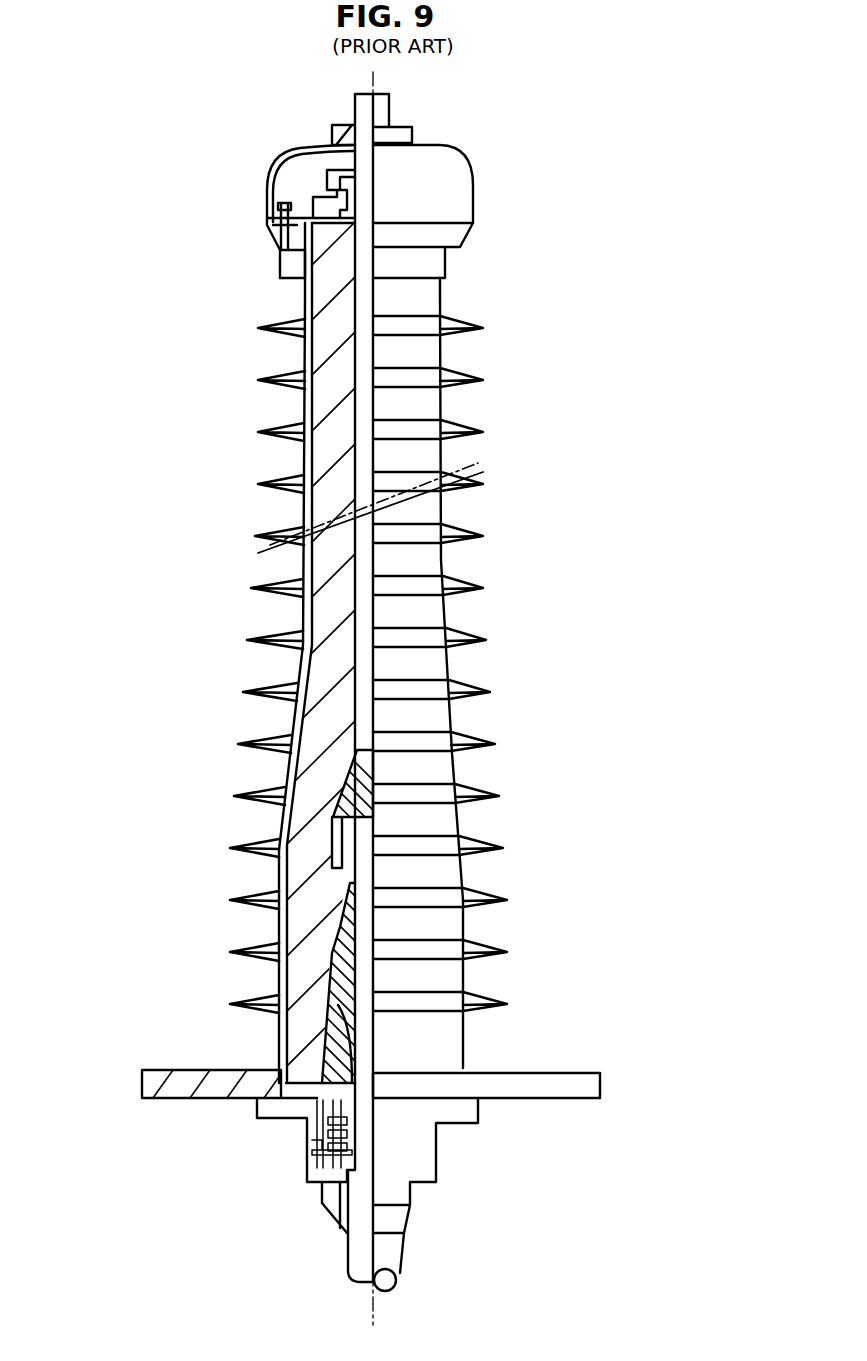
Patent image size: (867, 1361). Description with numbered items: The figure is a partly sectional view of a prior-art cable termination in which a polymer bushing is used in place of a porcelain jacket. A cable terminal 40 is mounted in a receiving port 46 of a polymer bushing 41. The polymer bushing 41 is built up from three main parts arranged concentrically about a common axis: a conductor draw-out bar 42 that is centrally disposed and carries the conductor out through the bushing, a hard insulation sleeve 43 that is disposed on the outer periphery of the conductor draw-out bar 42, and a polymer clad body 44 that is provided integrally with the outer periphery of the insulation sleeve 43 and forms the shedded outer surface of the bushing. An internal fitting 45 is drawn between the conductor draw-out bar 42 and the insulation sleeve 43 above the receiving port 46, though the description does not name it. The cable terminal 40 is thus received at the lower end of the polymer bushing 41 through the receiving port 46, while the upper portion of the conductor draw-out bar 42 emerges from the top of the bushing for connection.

The cable terminal 40 is at (292, 1150).
The polymer bushing 41 is at (514, 660).
The conductor draw-out bar 42 is at (363, 207).
The hard insulation sleeve 43 is at (340, 475).
The polymer clad body 44 is at (257, 737).
The upper insert fitting 45 is at (333, 805).
The receiving port 46 is at (323, 943).